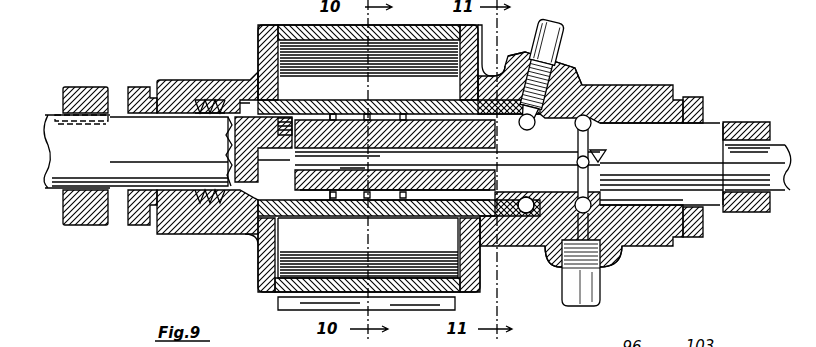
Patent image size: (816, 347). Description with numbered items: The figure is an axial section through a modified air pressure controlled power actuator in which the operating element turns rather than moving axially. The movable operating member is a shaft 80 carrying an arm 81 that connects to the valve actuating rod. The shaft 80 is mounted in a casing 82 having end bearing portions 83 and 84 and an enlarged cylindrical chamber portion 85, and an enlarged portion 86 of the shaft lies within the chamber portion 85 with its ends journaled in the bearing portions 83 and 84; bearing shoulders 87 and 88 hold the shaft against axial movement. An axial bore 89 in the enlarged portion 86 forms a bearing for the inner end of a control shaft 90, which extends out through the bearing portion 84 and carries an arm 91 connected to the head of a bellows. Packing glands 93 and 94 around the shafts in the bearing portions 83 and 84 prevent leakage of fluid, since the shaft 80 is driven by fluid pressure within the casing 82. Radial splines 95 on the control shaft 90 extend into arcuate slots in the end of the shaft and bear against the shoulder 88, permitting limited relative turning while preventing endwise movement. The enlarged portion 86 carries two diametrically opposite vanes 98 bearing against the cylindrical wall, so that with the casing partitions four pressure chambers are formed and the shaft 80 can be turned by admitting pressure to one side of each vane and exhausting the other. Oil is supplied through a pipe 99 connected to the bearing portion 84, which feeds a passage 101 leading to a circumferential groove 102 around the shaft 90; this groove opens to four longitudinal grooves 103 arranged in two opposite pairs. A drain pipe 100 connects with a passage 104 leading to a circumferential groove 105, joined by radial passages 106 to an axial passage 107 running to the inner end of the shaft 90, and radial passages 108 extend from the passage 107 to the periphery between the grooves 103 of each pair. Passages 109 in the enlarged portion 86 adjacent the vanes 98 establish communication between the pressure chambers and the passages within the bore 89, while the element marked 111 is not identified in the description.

The shaft 80 is at (122, 192).
The arm 81 is at (80, 226).
The casing 82 is at (275, 25).
The end bearing portion 83 is at (190, 80).
The end bearing portion 84 is at (660, 85).
The enlarged cylindrical chamber portion 85 is at (392, 27).
The enlarged portion 86 is at (418, 100).
The bearing shoulder 87 is at (290, 100).
The bearing shoulder 88 is at (530, 214).
The axial bore 89 is at (322, 216).
The control shaft 90 is at (716, 212).
The arm 91 is at (758, 122).
The packing gland 93 is at (195, 181).
The packing gland 94 is at (692, 181).
The radial splines 95 is at (395, 155).
The vanes 98 is at (424, 244).
The pipe 99 is at (562, 38).
The drain pipe 100 is at (604, 284).
The passage 101 is at (584, 88).
The circumferential groove 102 is at (543, 163).
The longitudinal grooves 103 is at (347, 104).
The passage 104 is at (610, 240).
The circumferential groove 105 is at (598, 126).
The radial passages 106 is at (607, 152).
The axial passage 107 is at (395, 162).
The radial passages 108 is at (385, 162).
The passages 109 is at (398, 208).
The spring 111 is at (210, 151).